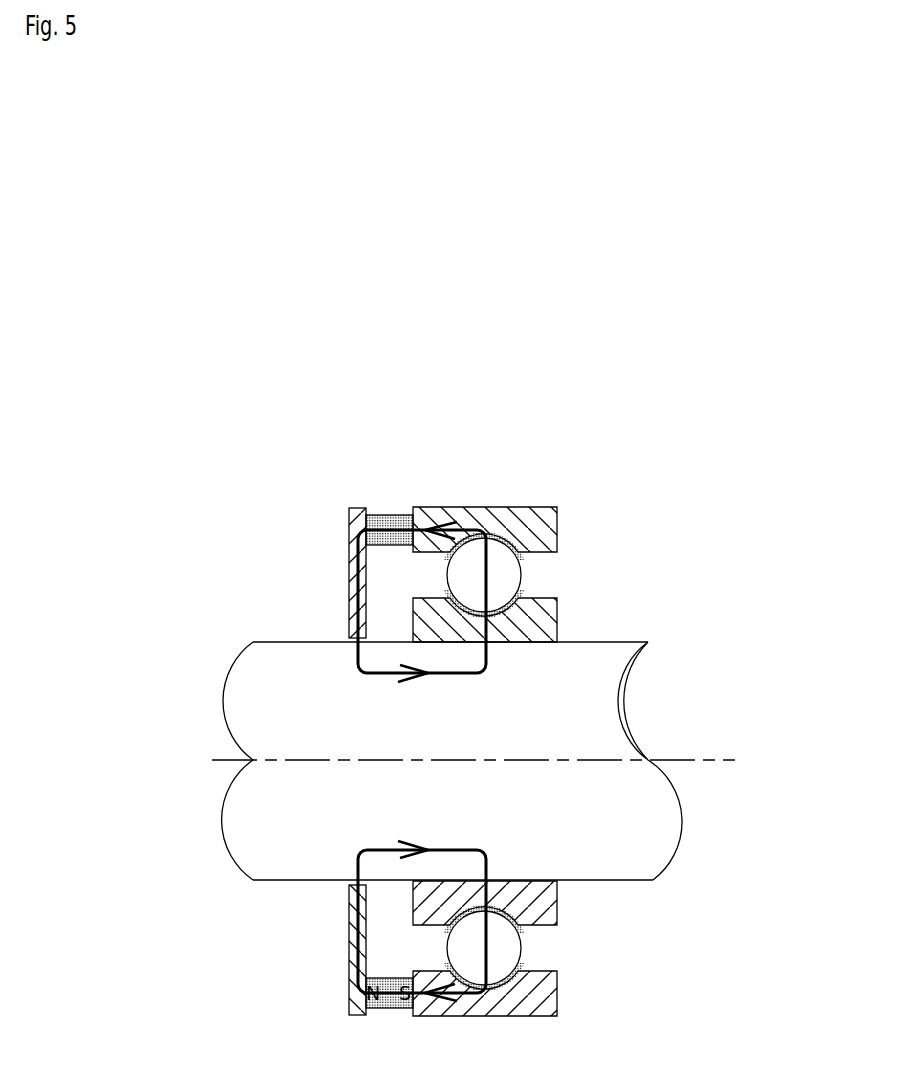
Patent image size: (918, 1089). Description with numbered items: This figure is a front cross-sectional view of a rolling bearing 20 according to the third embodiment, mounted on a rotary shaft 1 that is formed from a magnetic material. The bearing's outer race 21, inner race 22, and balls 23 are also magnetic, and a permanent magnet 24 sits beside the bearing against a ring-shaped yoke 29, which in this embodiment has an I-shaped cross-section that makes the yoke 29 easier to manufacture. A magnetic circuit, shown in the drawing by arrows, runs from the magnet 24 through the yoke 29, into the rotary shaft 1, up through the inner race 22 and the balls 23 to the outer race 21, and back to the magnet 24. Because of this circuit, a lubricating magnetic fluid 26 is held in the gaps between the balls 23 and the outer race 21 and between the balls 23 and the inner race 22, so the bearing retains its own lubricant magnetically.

The rotary shaft 1 is at (527, 742).
The rolling bearing 20 is at (450, 305).
The outer race 21 is at (515, 507).
The inner race 22 is at (557, 623).
The balls 23 is at (515, 573).
The magnet 24 is at (383, 515).
The lubricating magnetic fluid 26 is at (518, 550).
The yoke 29 is at (349, 583).